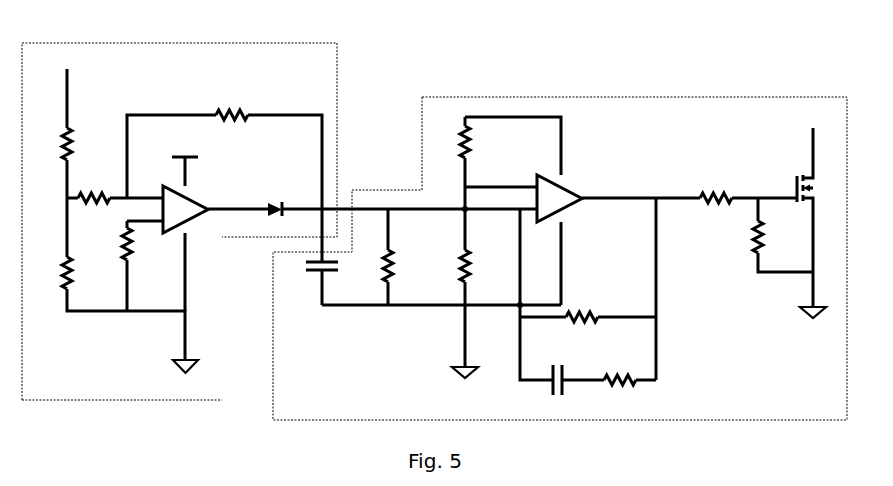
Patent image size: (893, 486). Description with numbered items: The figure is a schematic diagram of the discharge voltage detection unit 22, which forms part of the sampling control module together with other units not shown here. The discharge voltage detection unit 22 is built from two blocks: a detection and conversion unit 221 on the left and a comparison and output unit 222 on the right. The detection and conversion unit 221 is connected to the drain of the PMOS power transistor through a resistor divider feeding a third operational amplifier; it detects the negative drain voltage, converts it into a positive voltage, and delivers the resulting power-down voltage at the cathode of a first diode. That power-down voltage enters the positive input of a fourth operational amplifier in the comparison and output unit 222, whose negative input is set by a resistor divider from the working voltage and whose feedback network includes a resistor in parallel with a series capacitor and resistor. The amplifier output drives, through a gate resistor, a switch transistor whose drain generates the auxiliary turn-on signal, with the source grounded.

The discharge voltage detection unit 22 is at (380, 34).
The detection and conversion unit 221 is at (157, 49).
The comparison and output unit 222 is at (634, 105).